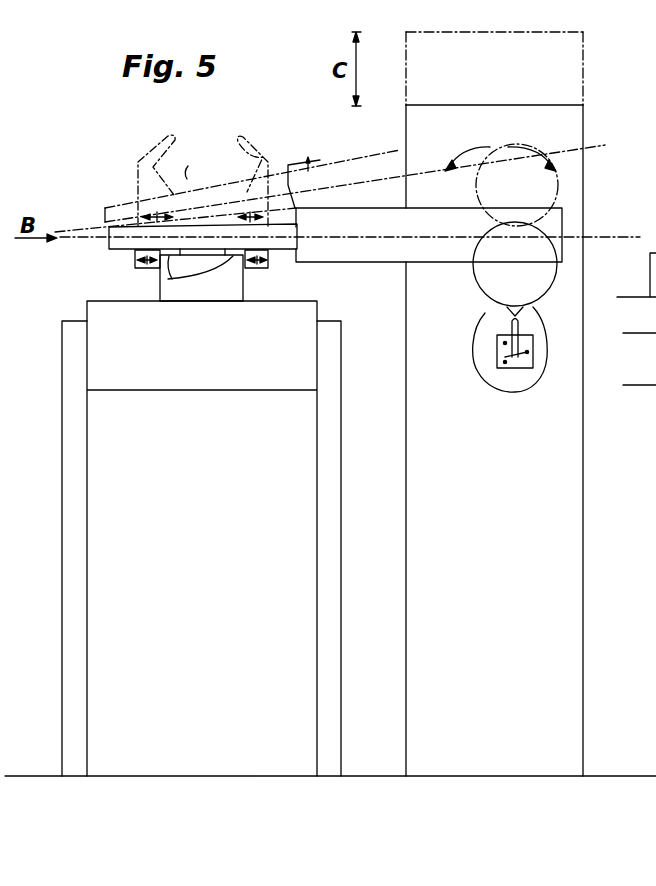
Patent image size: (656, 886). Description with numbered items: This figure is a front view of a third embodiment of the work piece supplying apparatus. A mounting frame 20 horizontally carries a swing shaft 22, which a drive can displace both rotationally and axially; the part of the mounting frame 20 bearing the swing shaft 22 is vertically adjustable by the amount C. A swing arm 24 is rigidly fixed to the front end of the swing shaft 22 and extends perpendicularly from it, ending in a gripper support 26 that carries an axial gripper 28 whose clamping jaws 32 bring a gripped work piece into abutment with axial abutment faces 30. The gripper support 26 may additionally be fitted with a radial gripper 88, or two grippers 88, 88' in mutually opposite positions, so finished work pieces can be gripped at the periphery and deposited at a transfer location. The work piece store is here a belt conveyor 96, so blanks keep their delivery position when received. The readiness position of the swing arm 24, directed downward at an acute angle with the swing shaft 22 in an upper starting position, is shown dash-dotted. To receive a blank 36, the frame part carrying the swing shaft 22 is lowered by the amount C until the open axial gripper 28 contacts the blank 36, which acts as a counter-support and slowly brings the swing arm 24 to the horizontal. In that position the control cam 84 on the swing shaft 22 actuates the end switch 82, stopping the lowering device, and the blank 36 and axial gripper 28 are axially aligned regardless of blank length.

The mounting frame 20 is at (583, 490).
The swing shaft 22 is at (586, 175).
The swing arm 24 is at (323, 208).
The gripper support 26 is at (203, 228).
The axial gripper 28 is at (130, 258).
The axial abutment faces 30 is at (160, 283).
The clamping jaws 32 is at (137, 267).
The blank 36 is at (220, 288).
The end switch 82 is at (515, 368).
The control cam 84 is at (510, 308).
The radial gripper 88 is at (131, 167).
The gripper 88' is at (230, 166).
The belt conveyor 96 is at (205, 392).